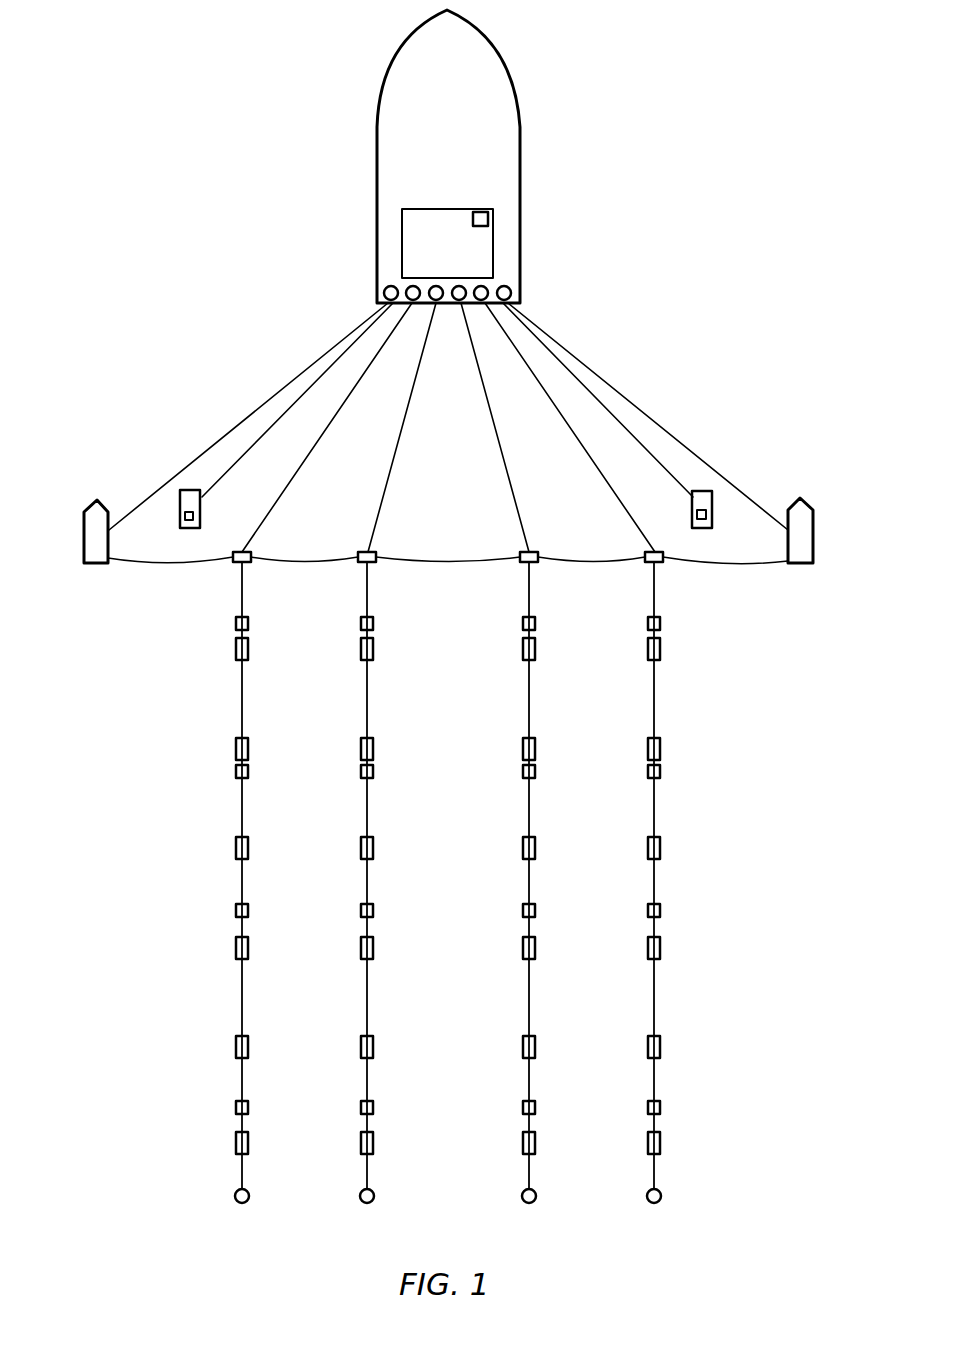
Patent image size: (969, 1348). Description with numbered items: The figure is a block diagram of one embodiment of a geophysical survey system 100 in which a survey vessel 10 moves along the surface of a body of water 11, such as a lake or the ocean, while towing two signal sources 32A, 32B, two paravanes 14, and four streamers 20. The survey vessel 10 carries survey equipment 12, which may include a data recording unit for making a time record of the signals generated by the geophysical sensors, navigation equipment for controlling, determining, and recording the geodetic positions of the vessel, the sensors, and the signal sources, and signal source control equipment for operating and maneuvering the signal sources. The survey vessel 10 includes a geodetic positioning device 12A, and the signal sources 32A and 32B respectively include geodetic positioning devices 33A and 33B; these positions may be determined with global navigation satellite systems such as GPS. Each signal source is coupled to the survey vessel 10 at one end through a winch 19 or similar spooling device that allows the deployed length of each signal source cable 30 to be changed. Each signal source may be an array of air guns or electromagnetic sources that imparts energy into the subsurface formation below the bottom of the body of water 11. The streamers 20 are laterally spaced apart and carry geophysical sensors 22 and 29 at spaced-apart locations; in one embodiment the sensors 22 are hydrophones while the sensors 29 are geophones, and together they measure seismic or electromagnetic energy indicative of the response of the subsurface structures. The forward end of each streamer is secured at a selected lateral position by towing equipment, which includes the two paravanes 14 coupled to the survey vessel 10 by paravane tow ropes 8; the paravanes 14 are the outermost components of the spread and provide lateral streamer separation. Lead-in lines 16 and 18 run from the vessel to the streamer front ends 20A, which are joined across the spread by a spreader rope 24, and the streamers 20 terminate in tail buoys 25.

The geophysical survey system 100 is at (160, 62).
The survey vessel 10 is at (463, 136).
The body of water 11 is at (782, 173).
The survey equipment 12 is at (472, 210).
The geodetic positioning device 12A is at (488, 219).
The winch 19 is at (384, 292).
The paravane tow ropes 8 is at (281, 395).
The signal source cable 30 is at (347, 359).
The outer lead-in cables 16 is at (262, 521).
The inner lead-in cables 18 is at (389, 471).
The paravanes 14 is at (84, 541).
The signal source 32A is at (190, 490).
The signal source 32B is at (698, 491).
The geodetic positioning device 33A is at (180, 520).
The geodetic positioning device 33B is at (713, 520).
The spreader rope 24 is at (414, 559).
The streamers 20 is at (243, 593).
The streamer front end 20A is at (365, 552).
The geophysical sensors 22 is at (373, 647).
The geophysical sensors 29 is at (373, 623).
The tail buoys 25 is at (368, 1203).